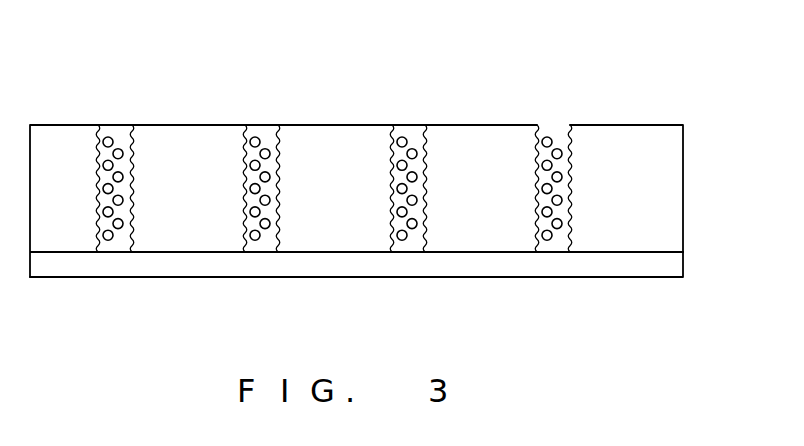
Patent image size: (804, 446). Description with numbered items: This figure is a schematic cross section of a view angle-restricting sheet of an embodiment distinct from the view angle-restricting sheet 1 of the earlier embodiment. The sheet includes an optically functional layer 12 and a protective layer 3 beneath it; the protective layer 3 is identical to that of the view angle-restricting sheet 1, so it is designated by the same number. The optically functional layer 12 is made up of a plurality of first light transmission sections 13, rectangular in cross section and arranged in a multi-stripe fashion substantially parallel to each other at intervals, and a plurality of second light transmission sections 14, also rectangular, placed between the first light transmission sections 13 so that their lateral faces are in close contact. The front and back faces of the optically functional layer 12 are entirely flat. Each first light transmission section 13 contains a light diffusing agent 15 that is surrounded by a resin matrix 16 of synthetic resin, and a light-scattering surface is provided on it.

The view angle-restricting sheet 1 is at (393, 152).
The protective layer 3 is at (684, 265).
The optically functional layer 12 is at (393, 170).
The first light transmission section 13 is at (565, 157).
The second light transmission section 14 is at (625, 140).
The light diffusing agent 15 is at (547, 137).
The resin matrix 16 is at (562, 130).